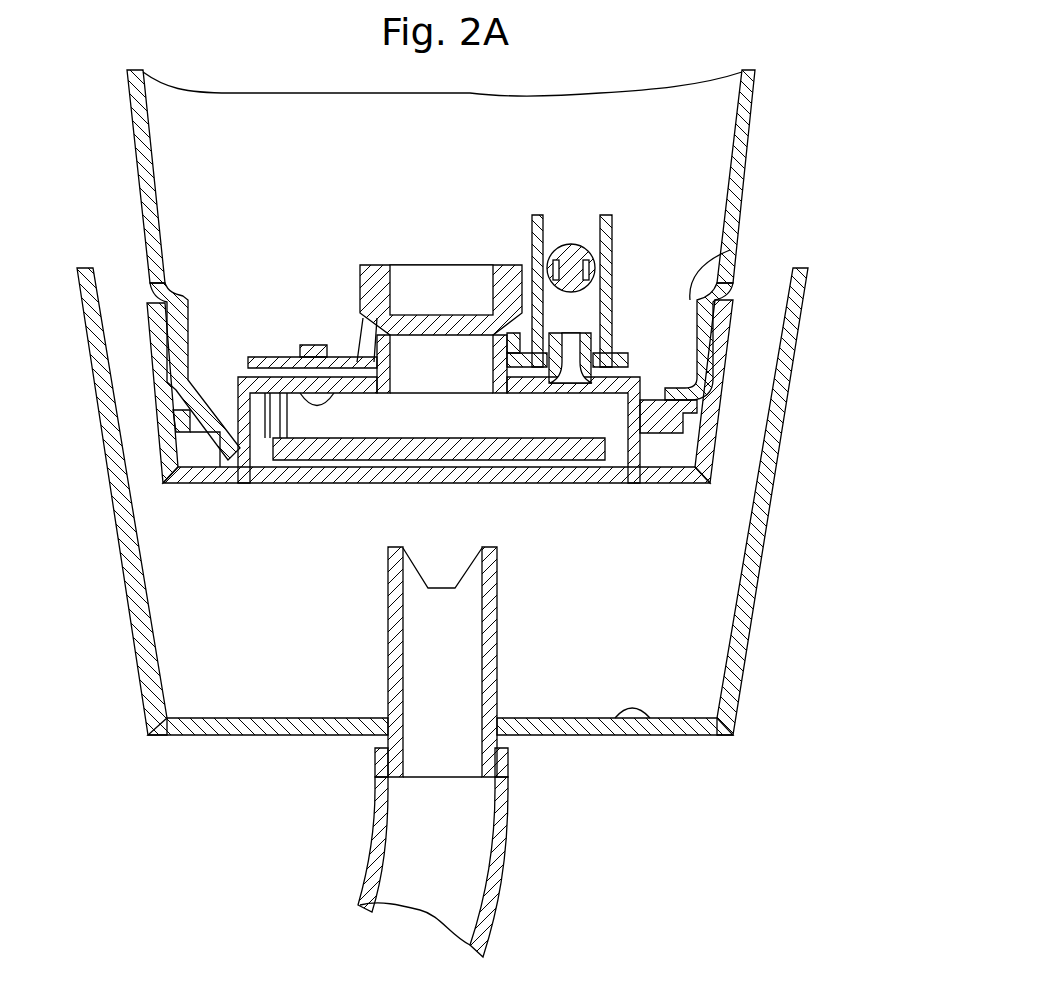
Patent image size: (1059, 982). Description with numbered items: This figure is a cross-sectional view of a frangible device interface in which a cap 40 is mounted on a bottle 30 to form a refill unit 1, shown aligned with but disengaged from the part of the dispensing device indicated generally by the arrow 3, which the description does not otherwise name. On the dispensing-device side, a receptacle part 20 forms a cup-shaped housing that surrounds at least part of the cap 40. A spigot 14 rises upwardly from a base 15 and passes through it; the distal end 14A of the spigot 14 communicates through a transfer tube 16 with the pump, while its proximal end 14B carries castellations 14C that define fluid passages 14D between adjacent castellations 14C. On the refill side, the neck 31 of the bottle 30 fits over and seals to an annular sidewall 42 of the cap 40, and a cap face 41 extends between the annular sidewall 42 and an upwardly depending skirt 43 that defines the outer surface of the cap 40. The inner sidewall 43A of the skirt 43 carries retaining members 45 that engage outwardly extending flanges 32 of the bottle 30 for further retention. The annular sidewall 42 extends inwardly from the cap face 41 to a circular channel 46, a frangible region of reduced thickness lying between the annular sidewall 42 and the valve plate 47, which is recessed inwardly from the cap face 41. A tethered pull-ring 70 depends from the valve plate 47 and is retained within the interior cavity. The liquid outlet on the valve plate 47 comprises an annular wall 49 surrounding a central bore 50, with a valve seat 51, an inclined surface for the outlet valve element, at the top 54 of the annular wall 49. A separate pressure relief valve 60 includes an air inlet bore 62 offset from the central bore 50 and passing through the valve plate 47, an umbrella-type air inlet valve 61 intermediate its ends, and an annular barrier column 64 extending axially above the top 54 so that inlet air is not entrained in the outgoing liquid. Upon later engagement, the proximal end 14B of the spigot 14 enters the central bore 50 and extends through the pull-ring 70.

The refill unit 1 is at (118, 145).
The outlet assembly 3 is at (530, 624).
The spigot 14 is at (396, 700).
The distal end 14A is at (385, 760).
The proximal end 14B is at (497, 572).
The castellations 14C is at (404, 577).
The fluid passages 14D is at (432, 540).
The base 15 is at (640, 716).
The transfer tube 16 is at (505, 830).
The receptacle part 20 is at (758, 556).
The bottle 30 is at (748, 128).
The neck 31 is at (655, 470).
The flanges 32 is at (182, 437).
The cap 40 is at (727, 343).
The cap face 41 is at (172, 485).
The annular sidewall 42 is at (255, 473).
The skirt 43 is at (152, 366).
The inner sidewall 43A is at (187, 322).
The retaining members 45 is at (700, 410).
The circular channel 46 is at (264, 395).
The valve plate 47 is at (290, 395).
The annular wall 49 is at (393, 380).
The central bore 50 is at (428, 376).
The valve seat 51 is at (393, 330).
The top 54 is at (366, 320).
The pressure relief valve 60 is at (584, 192).
The air inlet valve 61 is at (568, 246).
The air inlet bore 62 is at (572, 385).
The annular barrier column 64 is at (610, 228).
The tethered pull-ring 70 is at (330, 452).